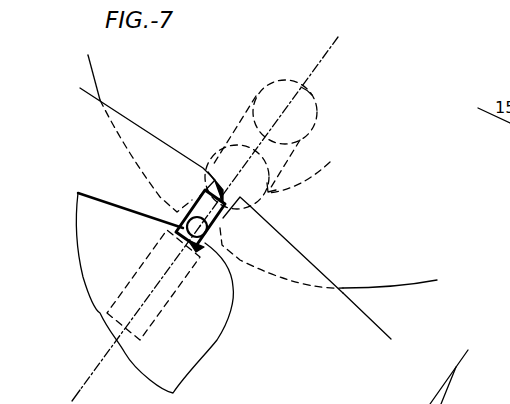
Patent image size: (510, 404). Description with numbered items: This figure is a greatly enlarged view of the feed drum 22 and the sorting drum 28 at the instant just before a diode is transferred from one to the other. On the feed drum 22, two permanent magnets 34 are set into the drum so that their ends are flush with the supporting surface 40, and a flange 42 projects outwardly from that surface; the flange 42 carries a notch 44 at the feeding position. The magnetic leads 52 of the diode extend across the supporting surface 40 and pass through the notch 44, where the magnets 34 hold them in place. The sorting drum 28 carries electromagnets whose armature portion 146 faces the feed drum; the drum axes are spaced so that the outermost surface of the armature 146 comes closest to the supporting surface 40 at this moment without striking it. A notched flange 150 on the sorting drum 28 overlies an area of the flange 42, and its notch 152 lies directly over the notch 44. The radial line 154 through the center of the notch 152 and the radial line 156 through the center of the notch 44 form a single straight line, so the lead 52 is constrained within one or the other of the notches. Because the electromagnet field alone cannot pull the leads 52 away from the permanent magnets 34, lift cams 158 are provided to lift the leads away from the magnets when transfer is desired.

The feed drum 22 is at (374, 315).
The sorting drum 28 is at (394, 291).
The permanent magnets 34 is at (167, 305).
The supporting surface 40 is at (173, 222).
The flanges 42 is at (297, 246).
The notch 44 is at (222, 214).
The magnetic leads 52 is at (200, 243).
The armature portion 146 is at (274, 184).
The notched flange 150 is at (93, 70).
The notches 152 is at (194, 209).
The radial line 154 is at (316, 67).
The radial line 156 is at (100, 362).
The lift cams 158 is at (95, 292).